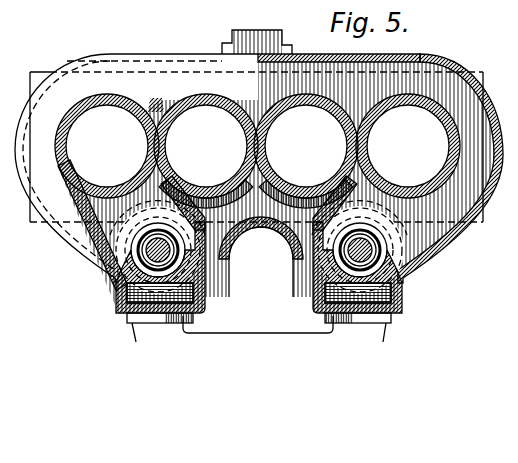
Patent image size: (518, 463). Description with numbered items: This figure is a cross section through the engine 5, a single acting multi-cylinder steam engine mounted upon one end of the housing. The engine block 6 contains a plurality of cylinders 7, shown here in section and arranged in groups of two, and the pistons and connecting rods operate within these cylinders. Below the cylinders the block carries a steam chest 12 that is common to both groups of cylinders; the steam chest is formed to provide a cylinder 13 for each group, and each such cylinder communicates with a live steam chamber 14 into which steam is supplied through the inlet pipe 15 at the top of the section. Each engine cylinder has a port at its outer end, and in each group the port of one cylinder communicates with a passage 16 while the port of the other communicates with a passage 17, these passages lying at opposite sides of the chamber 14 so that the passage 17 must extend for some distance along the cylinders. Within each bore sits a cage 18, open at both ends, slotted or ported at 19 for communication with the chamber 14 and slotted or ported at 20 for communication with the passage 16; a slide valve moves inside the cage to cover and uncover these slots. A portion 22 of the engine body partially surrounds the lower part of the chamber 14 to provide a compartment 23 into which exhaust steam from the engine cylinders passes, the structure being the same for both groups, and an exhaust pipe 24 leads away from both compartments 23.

The engine 5 is at (66, 55).
The block 6 is at (158, 116).
The cylinders 7 is at (257, 146).
The steam chest 12 is at (307, 59).
The cylinder 13 is at (114, 270).
The live steam chamber 14 is at (443, 234).
The inlet pipe 15 is at (258, 40).
The passage 16 is at (88, 250).
The passage 17 is at (223, 191).
The cage 18 is at (146, 228).
The slots or ports 19 is at (386, 232).
The slots or ports 20 is at (124, 224).
The portion of the engine body 22 is at (124, 296).
The compartment 23 is at (206, 303).
The exhaust pipe 24 is at (274, 333).